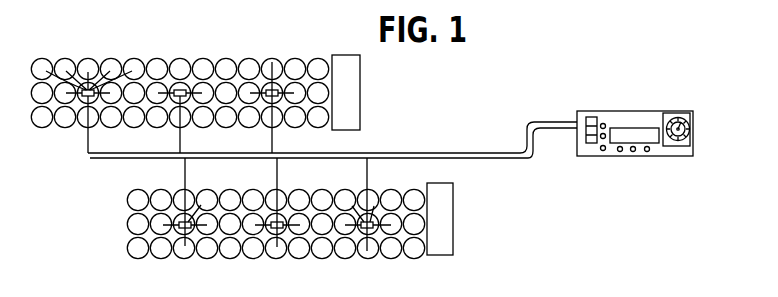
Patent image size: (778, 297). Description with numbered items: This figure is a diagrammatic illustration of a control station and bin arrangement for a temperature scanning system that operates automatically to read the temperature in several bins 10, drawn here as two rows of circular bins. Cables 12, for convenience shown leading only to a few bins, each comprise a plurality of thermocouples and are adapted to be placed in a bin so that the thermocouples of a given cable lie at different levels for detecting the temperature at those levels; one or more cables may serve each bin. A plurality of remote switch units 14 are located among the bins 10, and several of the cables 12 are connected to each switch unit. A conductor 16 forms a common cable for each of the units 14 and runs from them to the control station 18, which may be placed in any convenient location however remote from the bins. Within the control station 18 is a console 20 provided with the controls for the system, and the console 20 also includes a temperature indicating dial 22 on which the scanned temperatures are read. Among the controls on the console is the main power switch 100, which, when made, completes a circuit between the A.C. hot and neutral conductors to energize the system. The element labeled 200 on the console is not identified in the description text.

The bins 10 is at (41, 64).
The cables 12 is at (100, 89).
The remote switch units 14 is at (268, 62).
The conductor 16 is at (453, 153).
The control station 18 is at (512, 112).
The console 20 is at (603, 152).
The temperature indicating dial 22 is at (684, 117).
The main power switch 100 is at (586, 118).
The terminal block 200 is at (585, 135).